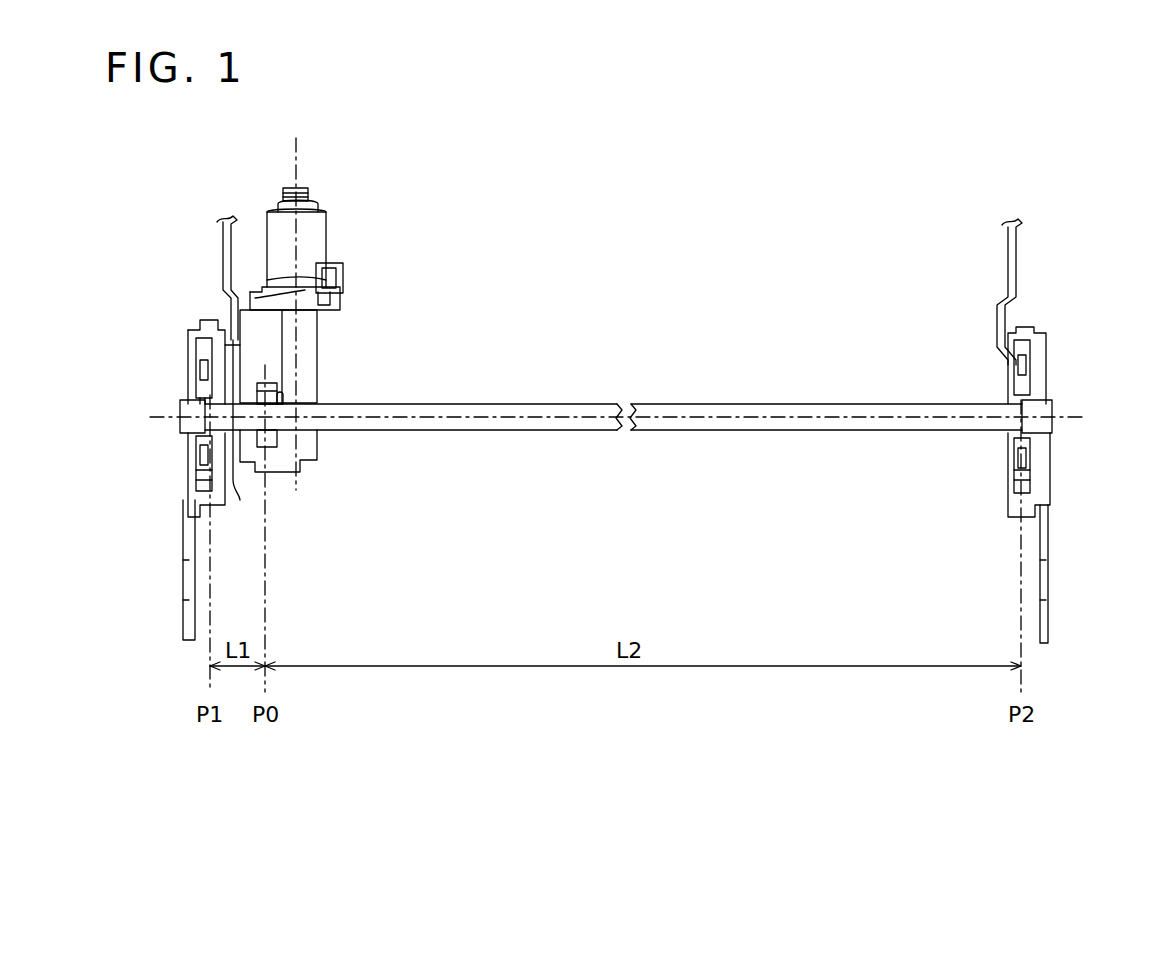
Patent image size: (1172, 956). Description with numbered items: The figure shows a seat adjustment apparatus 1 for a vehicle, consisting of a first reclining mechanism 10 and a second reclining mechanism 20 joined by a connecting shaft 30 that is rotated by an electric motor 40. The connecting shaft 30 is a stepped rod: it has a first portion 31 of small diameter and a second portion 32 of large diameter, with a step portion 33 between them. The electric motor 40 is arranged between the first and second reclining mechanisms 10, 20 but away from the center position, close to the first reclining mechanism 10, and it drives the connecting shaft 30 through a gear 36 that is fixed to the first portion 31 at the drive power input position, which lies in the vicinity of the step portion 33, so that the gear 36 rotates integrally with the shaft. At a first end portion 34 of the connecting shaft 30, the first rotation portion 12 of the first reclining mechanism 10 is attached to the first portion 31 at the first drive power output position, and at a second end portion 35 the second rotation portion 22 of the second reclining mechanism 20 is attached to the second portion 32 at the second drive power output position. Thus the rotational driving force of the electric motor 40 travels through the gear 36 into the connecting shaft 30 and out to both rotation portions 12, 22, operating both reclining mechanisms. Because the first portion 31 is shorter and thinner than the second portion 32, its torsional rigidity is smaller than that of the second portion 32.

The seat adjustment apparatus 1 is at (922, 168).
The first reclining mechanism 10 is at (168, 352).
The first rotation portion 12 is at (185, 438).
The second reclining mechanism 20 is at (1062, 368).
The second rotation portion 22 is at (1048, 445).
The connecting shaft 30 is at (612, 338).
The first portion 31 is at (238, 495).
The second portion 32 is at (568, 425).
The step portion 33 is at (283, 397).
The first end portion 34 is at (180, 408).
The second end portion 35 is at (1055, 410).
The gear 36 is at (270, 388).
The electric motor 40 is at (350, 250).